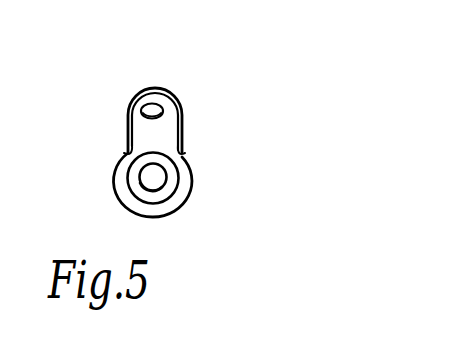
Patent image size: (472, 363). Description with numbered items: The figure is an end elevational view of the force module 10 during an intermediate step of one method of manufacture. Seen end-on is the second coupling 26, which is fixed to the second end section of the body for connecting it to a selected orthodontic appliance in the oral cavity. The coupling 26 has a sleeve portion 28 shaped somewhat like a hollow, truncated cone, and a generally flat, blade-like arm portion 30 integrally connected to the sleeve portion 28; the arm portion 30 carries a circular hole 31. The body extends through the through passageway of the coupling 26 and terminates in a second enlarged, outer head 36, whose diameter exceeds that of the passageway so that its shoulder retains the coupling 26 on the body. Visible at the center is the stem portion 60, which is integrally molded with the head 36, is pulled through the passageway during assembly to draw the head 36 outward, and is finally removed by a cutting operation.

The force module 10 is at (164, 132).
The second coupling 26 is at (184, 182).
The sleeve portion 28 is at (125, 207).
The arm portion 30 is at (148, 137).
The circular hole 31 is at (150, 112).
The second enlarged outer head 36 is at (161, 190).
The stem portion 60 is at (154, 177).